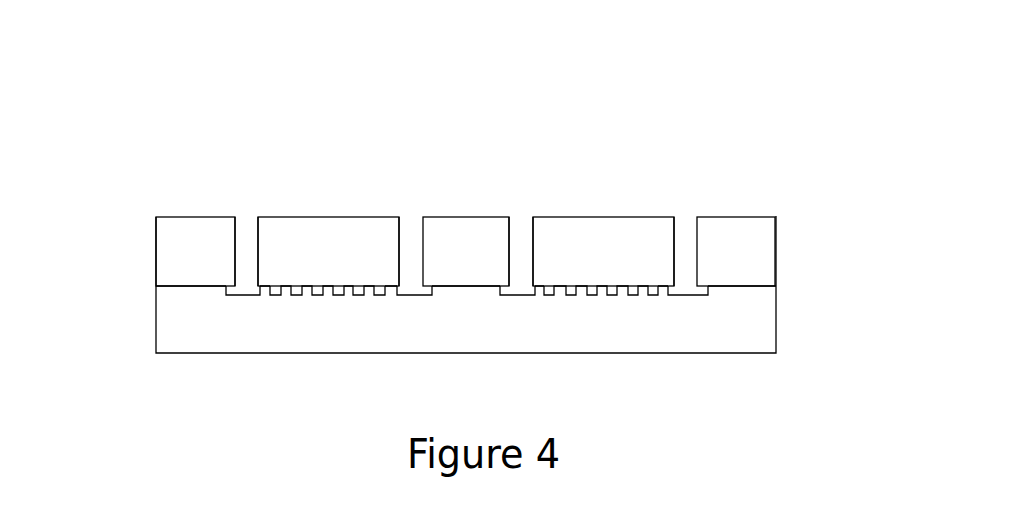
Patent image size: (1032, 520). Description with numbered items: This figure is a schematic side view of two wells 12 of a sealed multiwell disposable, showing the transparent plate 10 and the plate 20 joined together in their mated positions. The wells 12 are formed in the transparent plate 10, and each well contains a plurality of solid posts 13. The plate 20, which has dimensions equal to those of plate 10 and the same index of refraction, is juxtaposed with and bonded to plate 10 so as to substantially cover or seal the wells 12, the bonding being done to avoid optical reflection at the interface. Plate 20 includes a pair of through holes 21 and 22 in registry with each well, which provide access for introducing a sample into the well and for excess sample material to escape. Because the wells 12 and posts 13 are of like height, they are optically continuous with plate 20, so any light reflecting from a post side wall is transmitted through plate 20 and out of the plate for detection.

The transparent plate 10 is at (755, 334).
The wells 12 is at (240, 296).
The solid posts 13 is at (560, 291).
The plate 20 is at (328, 216).
The through hole 21 is at (255, 230).
The through hole 22 is at (403, 222).